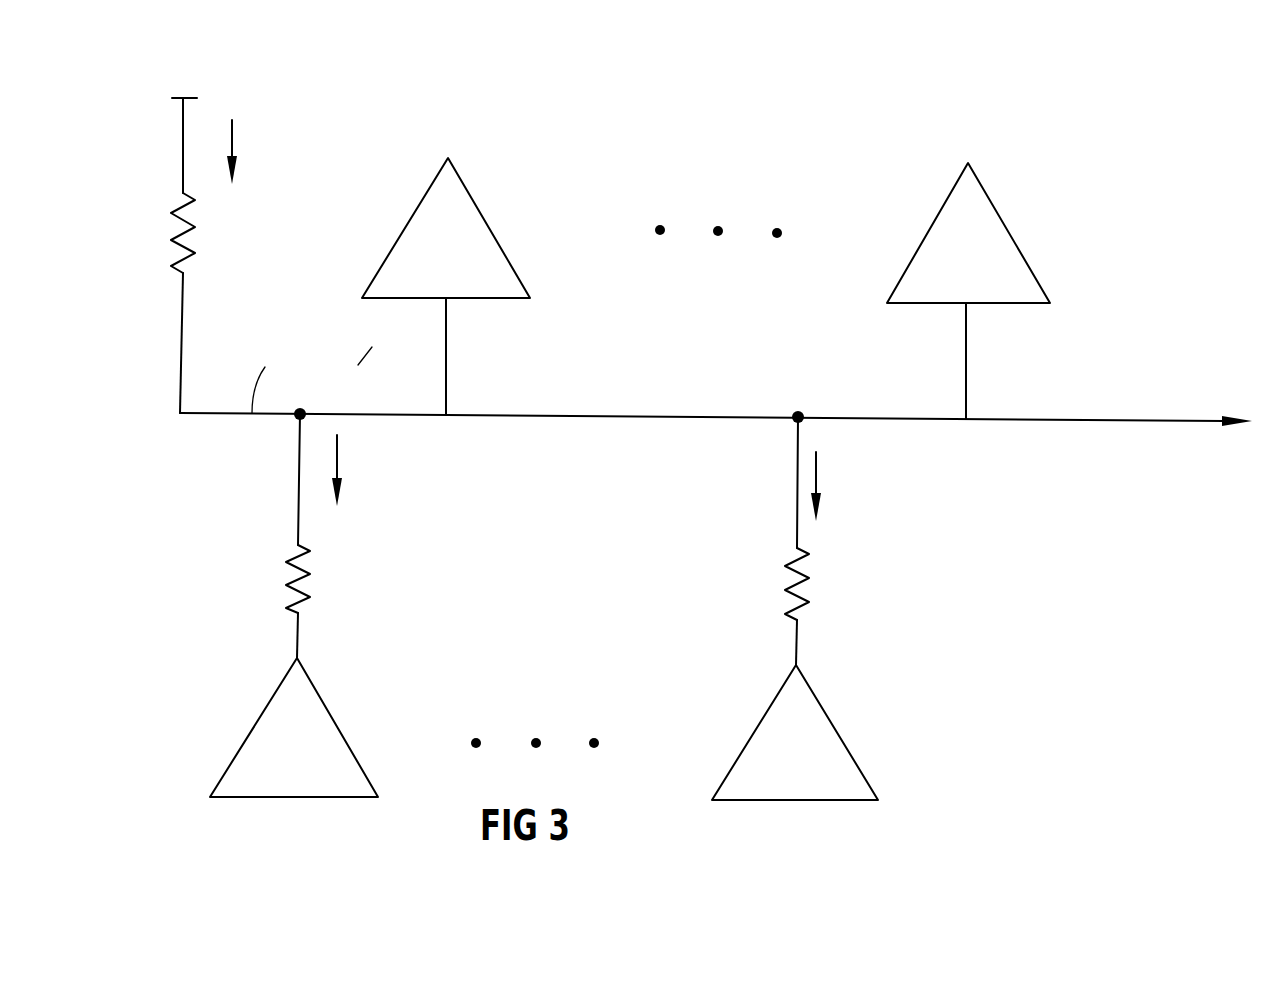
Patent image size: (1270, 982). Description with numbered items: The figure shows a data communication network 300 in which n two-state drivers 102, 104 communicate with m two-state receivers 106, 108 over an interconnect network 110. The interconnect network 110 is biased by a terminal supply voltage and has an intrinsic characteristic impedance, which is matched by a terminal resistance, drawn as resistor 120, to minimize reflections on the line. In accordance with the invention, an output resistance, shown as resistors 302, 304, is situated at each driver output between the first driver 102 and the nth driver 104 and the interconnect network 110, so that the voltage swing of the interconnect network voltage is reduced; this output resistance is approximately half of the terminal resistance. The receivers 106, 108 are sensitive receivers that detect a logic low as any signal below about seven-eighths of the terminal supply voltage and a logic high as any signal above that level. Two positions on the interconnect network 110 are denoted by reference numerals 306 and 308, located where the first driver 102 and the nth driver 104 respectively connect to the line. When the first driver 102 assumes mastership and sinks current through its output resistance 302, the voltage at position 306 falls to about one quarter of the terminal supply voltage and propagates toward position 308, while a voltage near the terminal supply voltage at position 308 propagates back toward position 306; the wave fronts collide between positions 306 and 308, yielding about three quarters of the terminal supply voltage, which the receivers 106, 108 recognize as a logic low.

The interconnect system 300 is at (1125, 82).
The termination resistor RT 120 is at (196, 256).
The interconnect network 110 is at (540, 418).
The position on the interconnect network 306 is at (298, 417).
The position on the interconnect network 308 is at (803, 421).
The receiver 106 is at (491, 231).
The receiver 108 is at (1017, 240).
The output resistor R0 of driver 1 302 is at (288, 563).
The output resistor R0 of driver n 304 is at (790, 567).
The driver 102 is at (258, 726).
The driver 104 is at (843, 742).